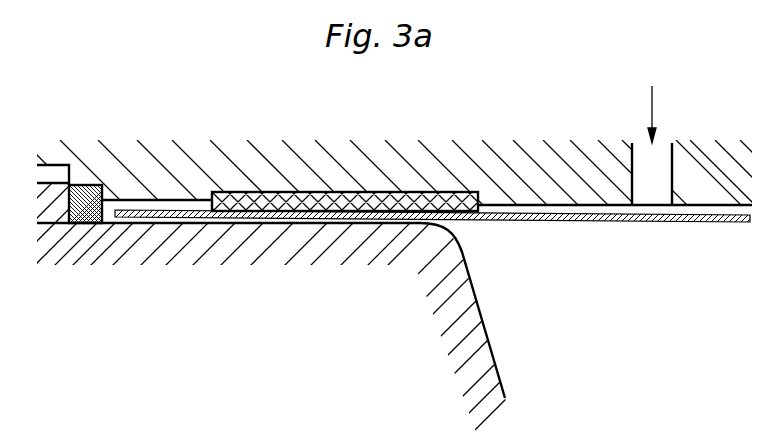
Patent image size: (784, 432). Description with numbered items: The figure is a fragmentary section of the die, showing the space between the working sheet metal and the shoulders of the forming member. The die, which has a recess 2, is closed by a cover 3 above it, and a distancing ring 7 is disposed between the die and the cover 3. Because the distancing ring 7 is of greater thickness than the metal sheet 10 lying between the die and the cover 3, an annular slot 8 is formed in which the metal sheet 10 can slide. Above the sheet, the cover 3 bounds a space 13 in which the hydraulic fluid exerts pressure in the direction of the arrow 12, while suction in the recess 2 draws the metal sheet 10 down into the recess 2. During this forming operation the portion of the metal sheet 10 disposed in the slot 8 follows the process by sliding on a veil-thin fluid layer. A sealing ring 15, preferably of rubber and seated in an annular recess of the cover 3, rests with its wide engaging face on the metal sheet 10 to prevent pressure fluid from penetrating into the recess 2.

The recess 2 is at (508, 342).
The cover 3 is at (132, 157).
The distancing ring 7 is at (80, 185).
The annular slot 8 is at (168, 210).
The metal sheet 10 is at (484, 211).
The arrow 12 is at (653, 88).
The space 13 is at (679, 211).
The sealing ring 15 is at (283, 192).